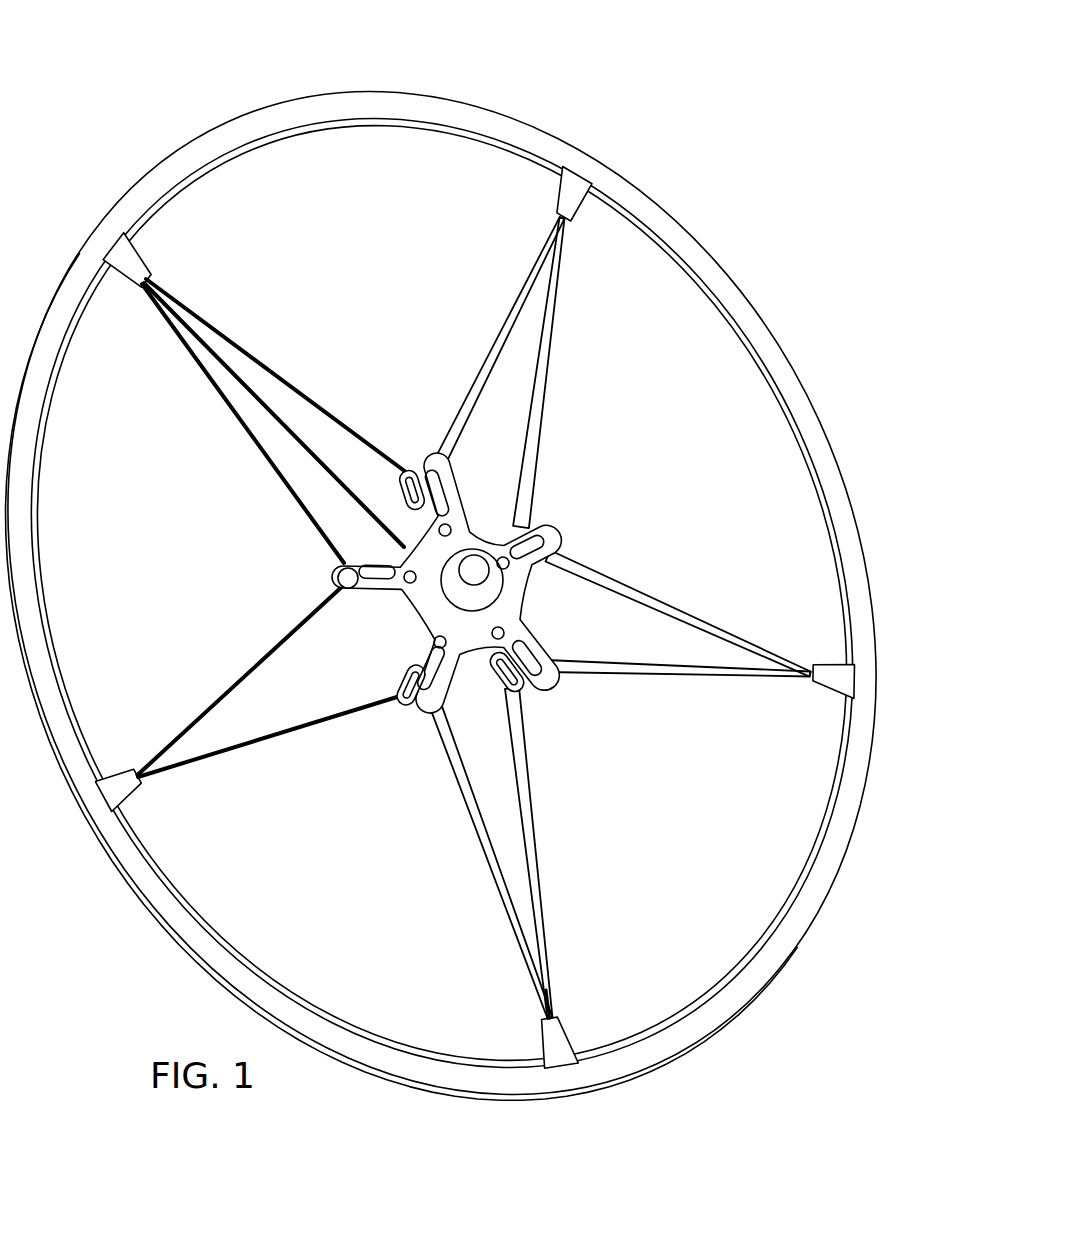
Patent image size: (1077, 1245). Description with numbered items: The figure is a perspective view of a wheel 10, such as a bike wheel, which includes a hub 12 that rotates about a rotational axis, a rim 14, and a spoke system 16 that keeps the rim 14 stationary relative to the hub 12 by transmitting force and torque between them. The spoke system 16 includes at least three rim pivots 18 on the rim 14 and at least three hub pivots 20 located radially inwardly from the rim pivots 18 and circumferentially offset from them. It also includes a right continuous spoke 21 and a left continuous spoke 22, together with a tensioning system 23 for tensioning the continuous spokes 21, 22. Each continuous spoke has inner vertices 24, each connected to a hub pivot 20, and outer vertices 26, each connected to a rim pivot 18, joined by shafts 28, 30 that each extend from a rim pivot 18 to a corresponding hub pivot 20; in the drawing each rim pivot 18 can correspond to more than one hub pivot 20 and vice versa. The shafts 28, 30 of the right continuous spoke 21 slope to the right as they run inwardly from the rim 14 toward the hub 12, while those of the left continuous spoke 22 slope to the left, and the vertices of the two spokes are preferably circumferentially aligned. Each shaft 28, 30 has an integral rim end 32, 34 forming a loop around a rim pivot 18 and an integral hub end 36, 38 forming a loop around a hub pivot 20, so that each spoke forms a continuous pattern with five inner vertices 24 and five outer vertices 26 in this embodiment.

The wheel 10 is at (720, 108).
The hub 12 is at (459, 614).
The rim 14 is at (600, 162).
The spoke system 16 is at (775, 312).
The rim pivot 18 is at (160, 252).
The hub pivot 20 is at (453, 467).
The right continuous spoke 21 is at (532, 408).
The left continuous spoke 22 is at (550, 392).
The tensioning system 23 is at (568, 527).
The inner vertex 24 is at (338, 575).
The outer vertex 26 is at (143, 287).
The shaft 28 is at (490, 860).
The shaft 30 is at (542, 866).
The rim end 32 is at (538, 1017).
The rim end 34 is at (562, 998).
The hub end 36 is at (410, 722).
The hub end 38 is at (543, 700).